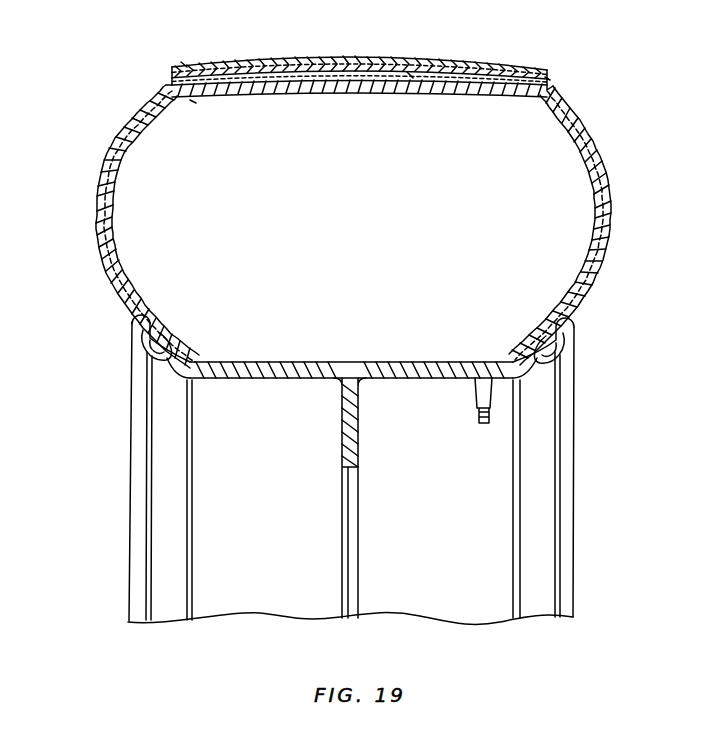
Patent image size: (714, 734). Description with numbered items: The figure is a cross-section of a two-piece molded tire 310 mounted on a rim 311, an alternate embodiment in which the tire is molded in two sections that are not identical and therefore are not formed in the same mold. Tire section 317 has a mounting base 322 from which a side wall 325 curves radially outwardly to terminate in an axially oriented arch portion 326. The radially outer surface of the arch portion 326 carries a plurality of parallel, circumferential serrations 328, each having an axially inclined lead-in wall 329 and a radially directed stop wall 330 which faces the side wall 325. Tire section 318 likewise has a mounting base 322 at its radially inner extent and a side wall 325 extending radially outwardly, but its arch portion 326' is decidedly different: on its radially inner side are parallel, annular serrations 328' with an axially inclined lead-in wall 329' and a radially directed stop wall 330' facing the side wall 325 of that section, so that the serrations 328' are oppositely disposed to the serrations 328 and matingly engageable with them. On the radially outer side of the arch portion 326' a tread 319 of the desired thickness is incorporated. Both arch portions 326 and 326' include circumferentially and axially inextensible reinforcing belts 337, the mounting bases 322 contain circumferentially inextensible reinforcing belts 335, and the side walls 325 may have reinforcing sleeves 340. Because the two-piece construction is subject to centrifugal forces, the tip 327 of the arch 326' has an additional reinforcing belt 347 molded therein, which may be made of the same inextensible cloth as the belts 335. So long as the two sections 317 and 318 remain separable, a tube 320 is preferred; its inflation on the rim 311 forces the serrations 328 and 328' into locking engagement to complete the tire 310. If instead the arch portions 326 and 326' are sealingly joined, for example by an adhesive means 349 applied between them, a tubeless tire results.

The two-piece molded tire 310 is at (626, 177).
The rim 311 is at (530, 481).
The tire section 317 is at (97, 217).
The tire section 318 is at (612, 213).
The tread 319 is at (498, 70).
The tube 320 is at (270, 360).
The mounting base 322 is at (158, 336).
The side wall 325 is at (95, 238).
The arch portion 326 is at (359, 102).
The arch portion 326' is at (359, 50).
The tip 327 is at (172, 76).
The serrations 328 is at (359, 53).
The serrations 328' is at (397, 107).
The lead-in wall 329 is at (359, 115).
The lead-in wall 329' is at (361, 116).
The stop wall 330 is at (359, 100).
The stop wall 330' is at (359, 120).
The reinforcing belts 335 is at (148, 378).
The reinforcing belts 337 is at (548, 76).
The reinforcing sleeves 340 is at (118, 257).
The reinforcing belt 347 is at (184, 60).
The adhesive means 349 is at (170, 88).